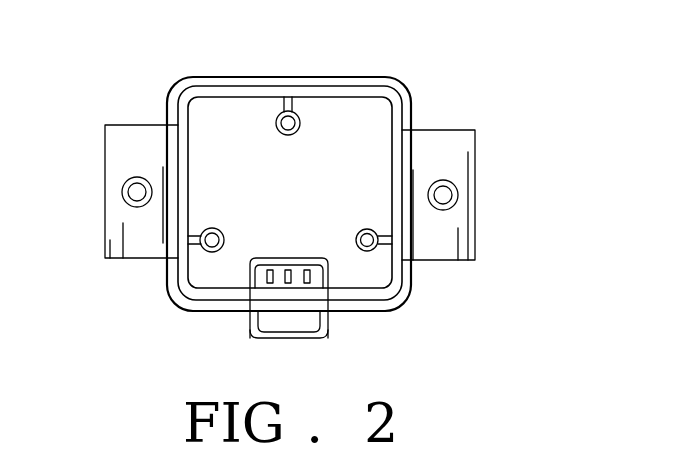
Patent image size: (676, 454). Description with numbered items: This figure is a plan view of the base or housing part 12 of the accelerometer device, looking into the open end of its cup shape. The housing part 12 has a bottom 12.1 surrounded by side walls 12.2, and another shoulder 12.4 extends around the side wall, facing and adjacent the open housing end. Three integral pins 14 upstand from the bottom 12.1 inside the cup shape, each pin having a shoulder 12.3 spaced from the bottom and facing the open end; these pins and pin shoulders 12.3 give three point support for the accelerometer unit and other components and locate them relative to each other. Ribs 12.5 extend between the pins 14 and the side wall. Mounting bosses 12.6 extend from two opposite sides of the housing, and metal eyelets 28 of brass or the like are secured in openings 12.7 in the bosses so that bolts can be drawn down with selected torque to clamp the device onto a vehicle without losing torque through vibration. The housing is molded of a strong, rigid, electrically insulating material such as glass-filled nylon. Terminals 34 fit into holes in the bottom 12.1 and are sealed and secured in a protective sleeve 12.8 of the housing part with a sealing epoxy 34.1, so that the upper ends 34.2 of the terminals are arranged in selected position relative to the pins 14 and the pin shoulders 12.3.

The housing or base part 12 is at (288, 174).
The bottom 12.1 is at (198, 108).
The side walls 12.2 is at (312, 82).
The shoulder 12.3 is at (280, 125).
The shoulder 12.4 is at (247, 93).
The ribs 12.5 is at (291, 106).
The mounting bosses 12.6 is at (132, 132).
The openings 12.7 is at (128, 198).
The protective sleeve 12.8 is at (250, 278).
The integral pins 14 is at (288, 135).
The metal eyelets 28 is at (125, 185).
The terminals 34 is at (273, 290).
The sealing epoxy 34.1 is at (289, 283).
The upper ends 34.2 is at (270, 283).